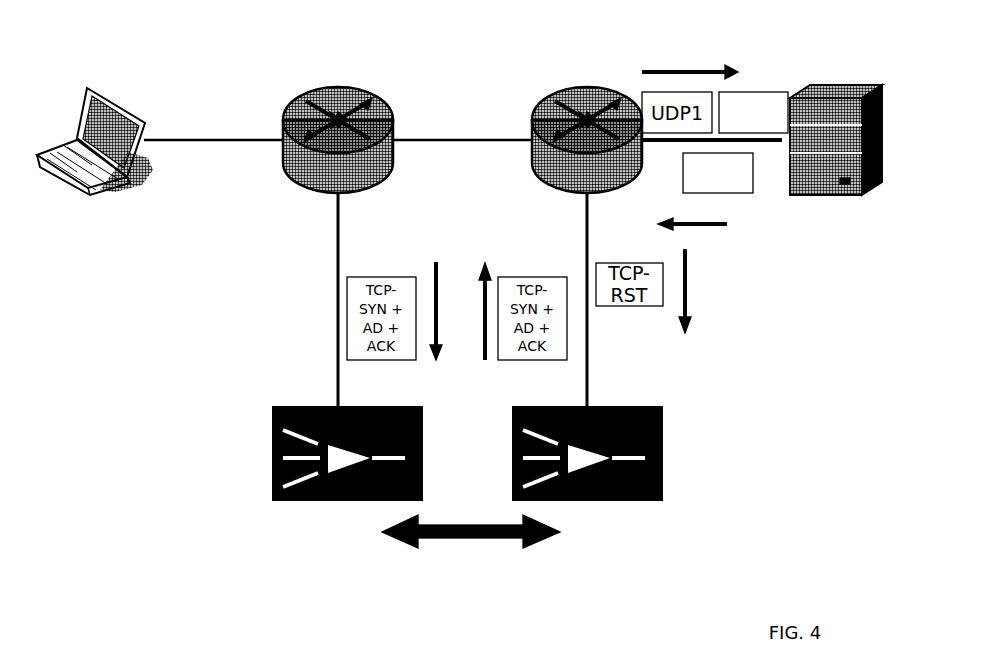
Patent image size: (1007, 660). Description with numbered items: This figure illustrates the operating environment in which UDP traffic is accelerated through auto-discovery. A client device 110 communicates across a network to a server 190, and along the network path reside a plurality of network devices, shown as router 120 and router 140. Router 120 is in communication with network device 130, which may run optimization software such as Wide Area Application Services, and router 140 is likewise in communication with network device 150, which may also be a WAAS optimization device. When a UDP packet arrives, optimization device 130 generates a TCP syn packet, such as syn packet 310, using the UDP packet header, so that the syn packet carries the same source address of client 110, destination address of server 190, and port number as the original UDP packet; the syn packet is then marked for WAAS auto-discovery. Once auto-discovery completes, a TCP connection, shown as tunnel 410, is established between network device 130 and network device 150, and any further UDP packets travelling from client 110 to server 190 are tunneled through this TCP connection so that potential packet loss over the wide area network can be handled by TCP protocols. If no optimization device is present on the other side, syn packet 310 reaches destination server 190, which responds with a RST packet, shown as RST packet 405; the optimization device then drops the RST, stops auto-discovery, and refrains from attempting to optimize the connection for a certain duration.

The client device 110 is at (92, 72).
The router 120 is at (332, 83).
The router 140 is at (580, 83).
The server 190 is at (830, 82).
The syn packet 310 is at (767, 83).
The RST packet 405 is at (727, 193).
The network device 130 is at (400, 403).
The network device 150 is at (663, 404).
The tunnel 410 is at (474, 547).